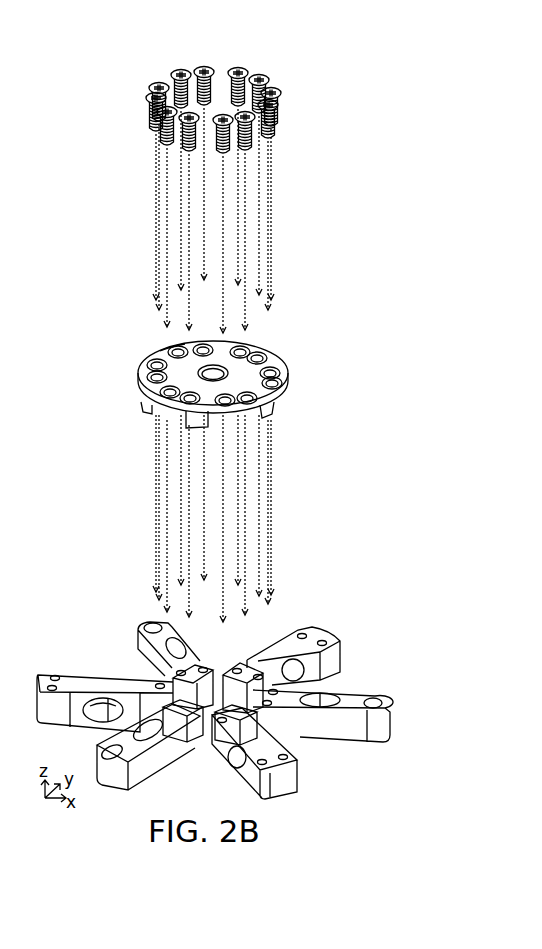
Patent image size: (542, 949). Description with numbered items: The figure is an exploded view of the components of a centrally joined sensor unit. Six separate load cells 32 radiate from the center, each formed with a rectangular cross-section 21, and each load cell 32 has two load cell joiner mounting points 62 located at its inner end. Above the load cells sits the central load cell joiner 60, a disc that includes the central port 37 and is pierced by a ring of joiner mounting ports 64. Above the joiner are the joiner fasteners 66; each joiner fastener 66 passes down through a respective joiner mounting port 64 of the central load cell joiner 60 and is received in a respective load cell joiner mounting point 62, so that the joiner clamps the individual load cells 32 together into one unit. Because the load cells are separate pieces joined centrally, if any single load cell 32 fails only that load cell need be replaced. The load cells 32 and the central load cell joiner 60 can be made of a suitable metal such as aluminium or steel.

The rectangular cross-section 21 is at (221, 709).
The load cell 32 is at (138, 655).
The central port 37 is at (176, 350).
The central load cell joiner 60 is at (290, 362).
The load cell joiner mounting point 62 is at (172, 688).
The joiner mounting port 64 is at (190, 347).
The joiner fastener 66 is at (211, 68).